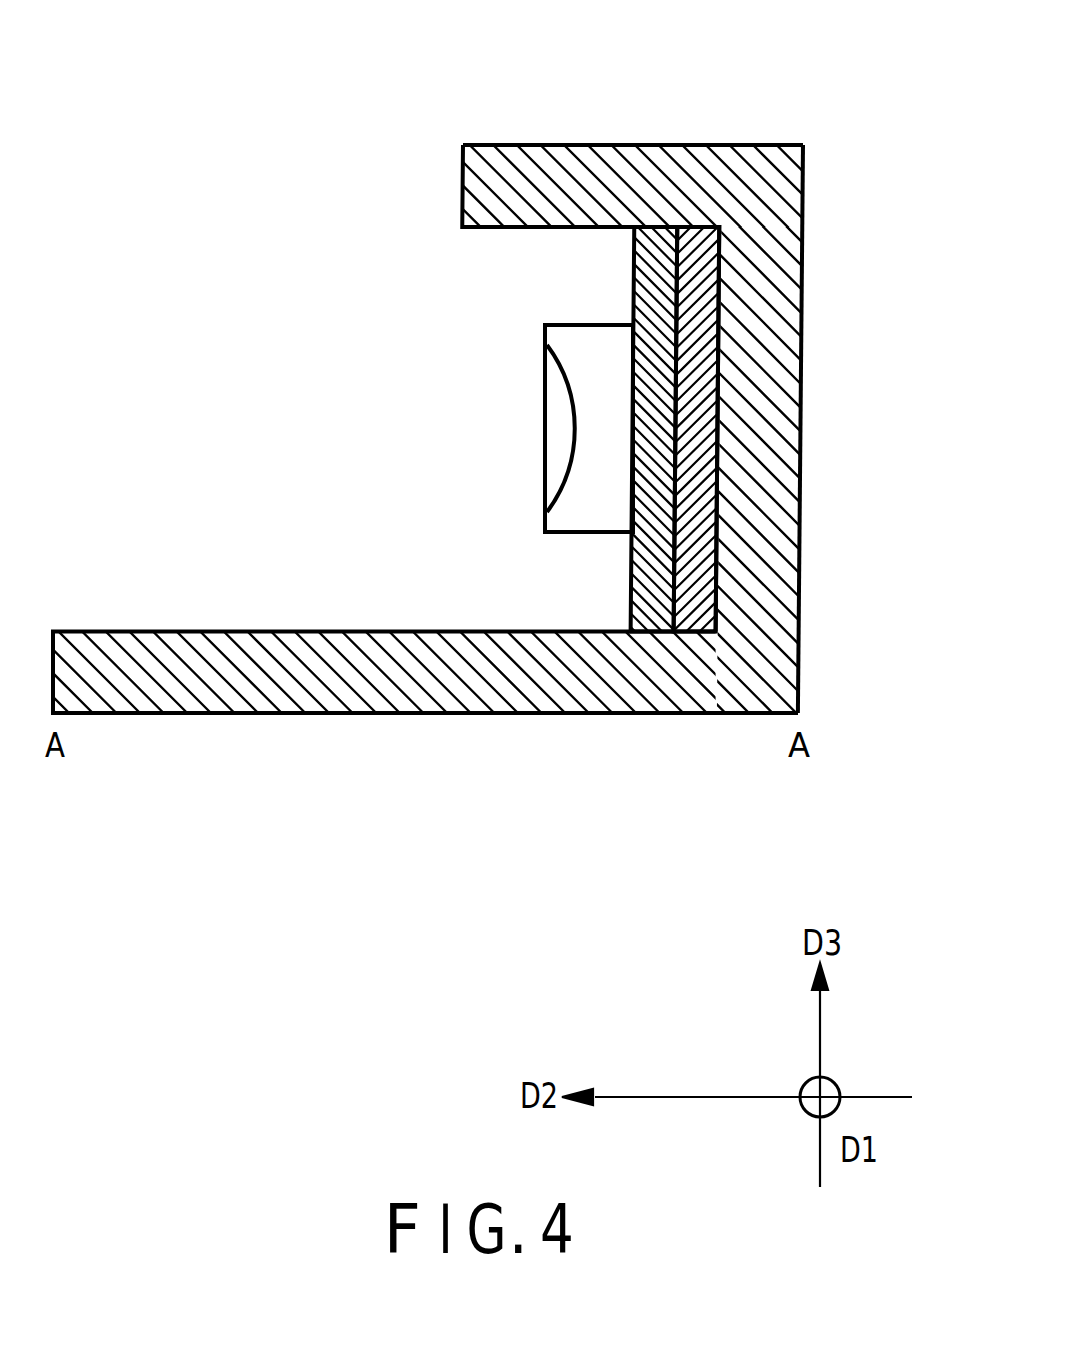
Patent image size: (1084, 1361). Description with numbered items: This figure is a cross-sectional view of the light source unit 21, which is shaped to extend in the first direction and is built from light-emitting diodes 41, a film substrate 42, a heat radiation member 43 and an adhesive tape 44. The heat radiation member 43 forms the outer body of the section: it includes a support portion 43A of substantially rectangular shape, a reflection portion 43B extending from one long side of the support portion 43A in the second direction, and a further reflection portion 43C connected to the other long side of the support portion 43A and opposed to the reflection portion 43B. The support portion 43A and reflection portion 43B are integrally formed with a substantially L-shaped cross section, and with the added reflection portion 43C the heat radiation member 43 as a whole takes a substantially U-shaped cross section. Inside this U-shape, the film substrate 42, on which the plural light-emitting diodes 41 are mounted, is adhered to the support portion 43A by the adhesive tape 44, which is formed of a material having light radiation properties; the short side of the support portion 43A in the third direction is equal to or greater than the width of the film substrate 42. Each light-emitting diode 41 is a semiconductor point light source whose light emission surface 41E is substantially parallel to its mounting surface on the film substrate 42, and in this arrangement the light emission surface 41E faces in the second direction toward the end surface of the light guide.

The light source unit 21 is at (488, 497).
The light-emitting diode 41 is at (518, 396).
The light emission surface 41E is at (543, 413).
The film substrate 42 is at (645, 605).
The heat radiation member 43 is at (488, 419).
The support portion 43A is at (775, 310).
The reflection portion 43B is at (230, 688).
The reflection portion 43C is at (565, 170).
The adhesive tape 44 is at (704, 605).